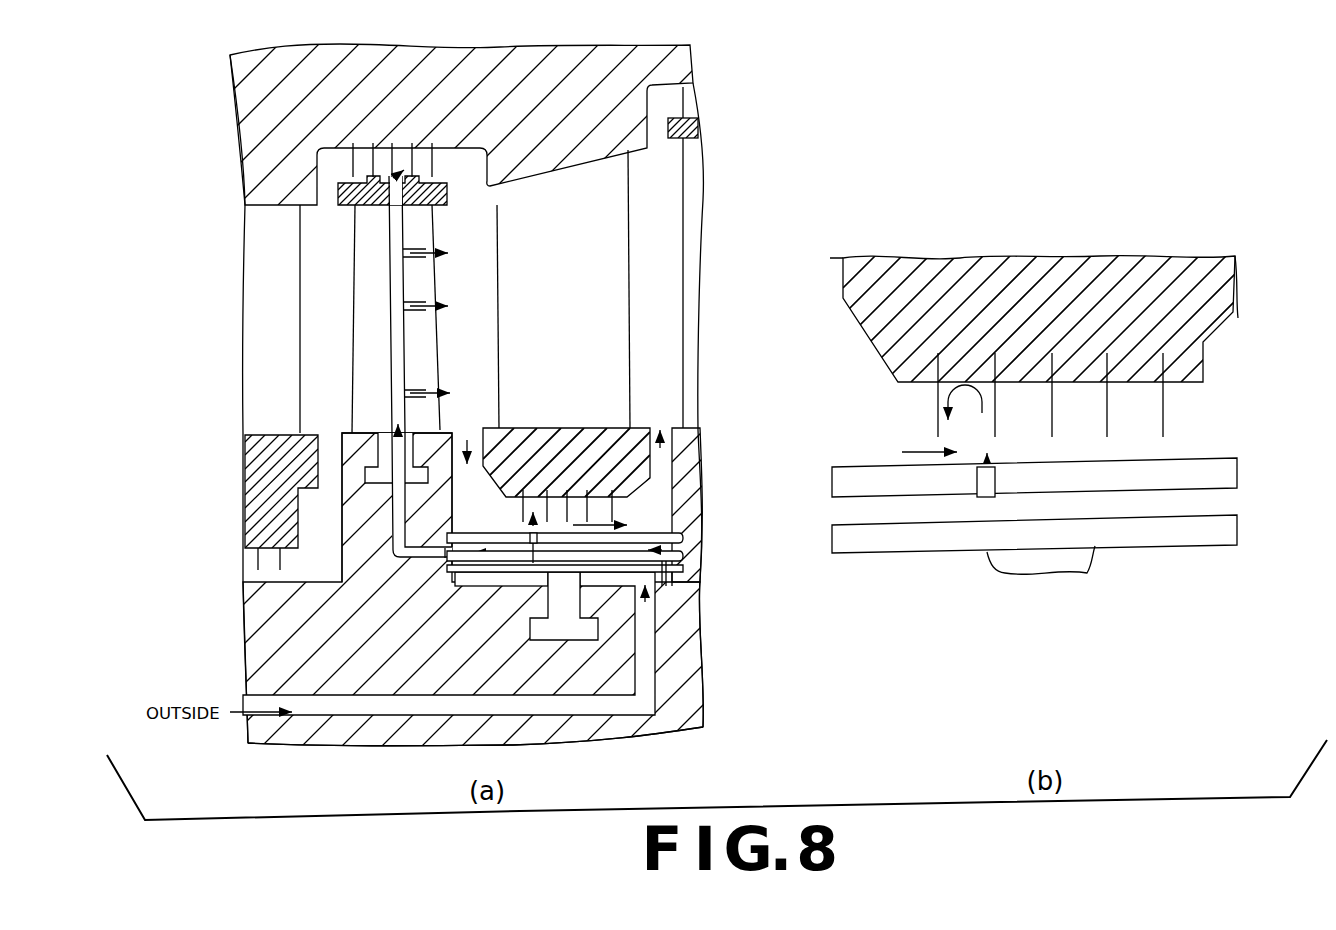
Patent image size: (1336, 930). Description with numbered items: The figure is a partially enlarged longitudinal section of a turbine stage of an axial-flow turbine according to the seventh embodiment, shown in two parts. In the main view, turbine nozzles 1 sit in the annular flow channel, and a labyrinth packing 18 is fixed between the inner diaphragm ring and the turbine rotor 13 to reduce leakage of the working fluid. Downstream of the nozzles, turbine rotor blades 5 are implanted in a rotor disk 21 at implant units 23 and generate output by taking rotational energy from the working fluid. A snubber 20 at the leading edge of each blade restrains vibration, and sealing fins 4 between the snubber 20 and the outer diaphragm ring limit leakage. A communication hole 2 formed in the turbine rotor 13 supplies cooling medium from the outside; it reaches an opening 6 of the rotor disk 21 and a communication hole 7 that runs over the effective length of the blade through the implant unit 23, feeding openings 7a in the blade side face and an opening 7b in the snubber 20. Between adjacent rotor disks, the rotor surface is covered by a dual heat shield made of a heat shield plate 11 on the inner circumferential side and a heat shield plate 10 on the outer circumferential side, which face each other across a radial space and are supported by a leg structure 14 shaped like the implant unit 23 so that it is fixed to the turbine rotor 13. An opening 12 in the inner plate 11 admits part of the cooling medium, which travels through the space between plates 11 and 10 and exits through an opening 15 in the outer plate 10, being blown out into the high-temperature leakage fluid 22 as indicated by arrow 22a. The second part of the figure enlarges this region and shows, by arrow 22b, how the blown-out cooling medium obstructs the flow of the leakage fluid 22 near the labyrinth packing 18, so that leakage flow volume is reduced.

The turbine nozzle 1 is at (605, 270).
The communication hole 2 is at (648, 650).
The sealing fins 4 is at (433, 163).
The turbine rotor blade 5 is at (363, 285).
The opening of the rotor disk 6 is at (450, 556).
The communication hole 7 is at (393, 347).
The openings 7a is at (417, 310).
The opening 7b is at (338, 191).
The heat shield plate on the outer circumferential side 10 is at (683, 537).
The heat shield plate on the inner circumferential side 11 is at (683, 558).
The opening 12 is at (668, 575).
The turbine rotor 13 is at (307, 652).
The leg structure 14 is at (552, 600).
The opening 15 is at (528, 530).
The labyrinth packing 18 is at (527, 507).
The snubber 20 is at (447, 190).
The rotor disk 21 is at (358, 527).
The leakage fluid 22 is at (627, 521).
The arrow 22a is at (550, 518).
The arrow 22b is at (938, 400).
The implant unit 23 is at (373, 482).